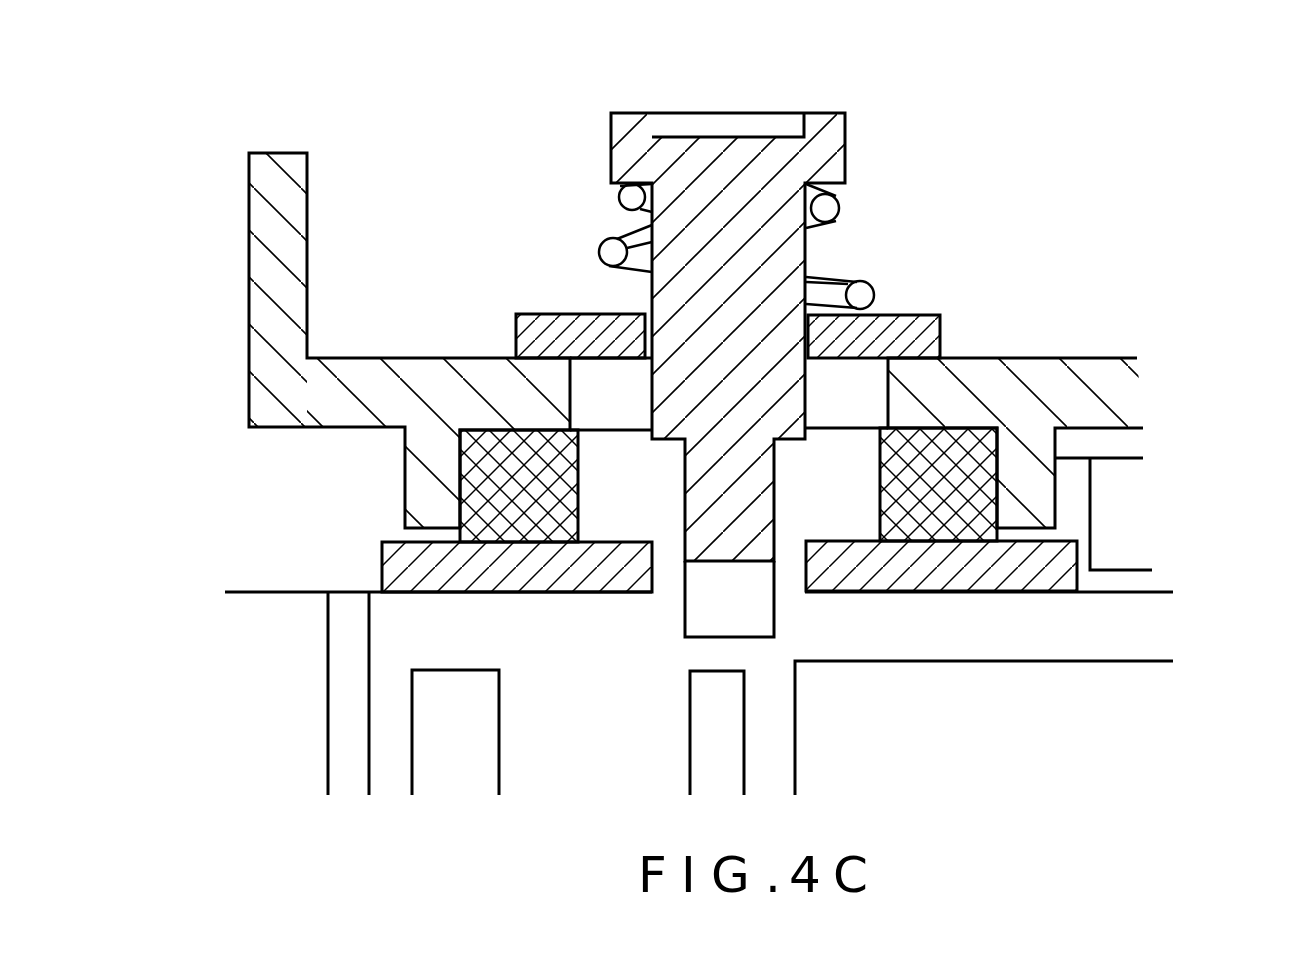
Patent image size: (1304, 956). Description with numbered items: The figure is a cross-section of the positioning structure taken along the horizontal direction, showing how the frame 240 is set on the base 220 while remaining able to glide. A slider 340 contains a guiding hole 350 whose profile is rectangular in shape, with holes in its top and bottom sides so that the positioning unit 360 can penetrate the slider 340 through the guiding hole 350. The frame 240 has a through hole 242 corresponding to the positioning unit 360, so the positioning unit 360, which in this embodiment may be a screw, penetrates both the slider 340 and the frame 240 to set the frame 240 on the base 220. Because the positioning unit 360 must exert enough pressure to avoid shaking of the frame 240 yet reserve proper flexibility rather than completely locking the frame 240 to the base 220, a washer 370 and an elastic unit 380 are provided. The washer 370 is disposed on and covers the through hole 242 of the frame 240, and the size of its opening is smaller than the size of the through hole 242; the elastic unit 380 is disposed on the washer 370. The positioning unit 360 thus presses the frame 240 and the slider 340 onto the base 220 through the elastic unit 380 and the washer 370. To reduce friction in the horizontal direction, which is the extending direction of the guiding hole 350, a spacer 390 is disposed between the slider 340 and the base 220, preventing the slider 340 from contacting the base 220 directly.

The base 220 is at (1153, 628).
The frame 240 is at (1080, 395).
The through hole 242 is at (609, 398).
The slider 340 is at (950, 498).
The guiding hole 350 is at (843, 500).
The positioning unit 360 is at (728, 170).
The washer 370 is at (900, 338).
The elastic unit 380 is at (827, 210).
The spacer 390 is at (983, 564).